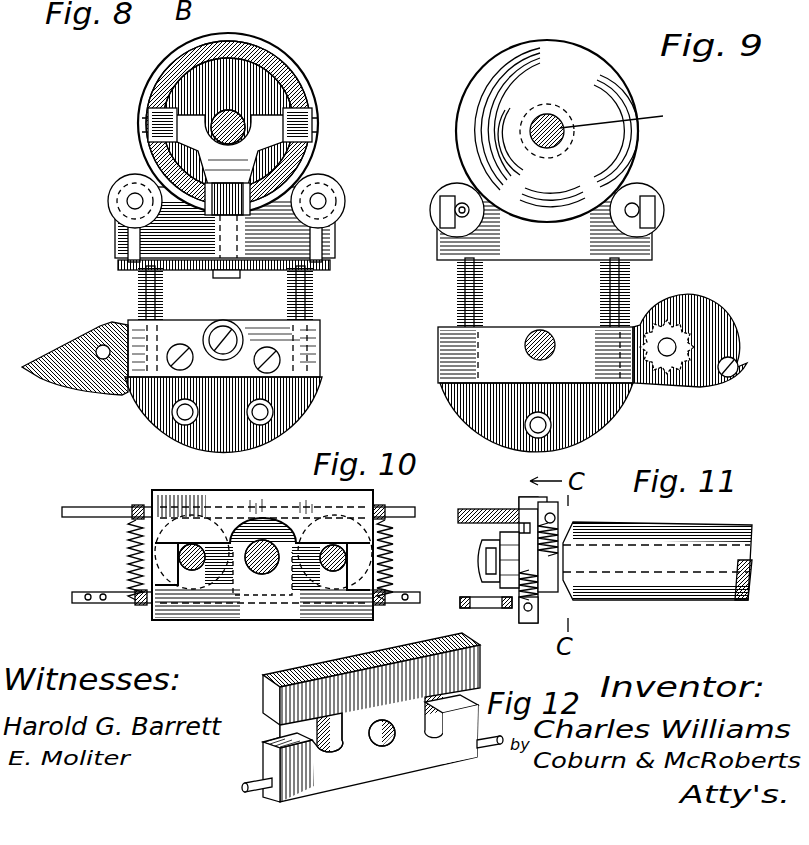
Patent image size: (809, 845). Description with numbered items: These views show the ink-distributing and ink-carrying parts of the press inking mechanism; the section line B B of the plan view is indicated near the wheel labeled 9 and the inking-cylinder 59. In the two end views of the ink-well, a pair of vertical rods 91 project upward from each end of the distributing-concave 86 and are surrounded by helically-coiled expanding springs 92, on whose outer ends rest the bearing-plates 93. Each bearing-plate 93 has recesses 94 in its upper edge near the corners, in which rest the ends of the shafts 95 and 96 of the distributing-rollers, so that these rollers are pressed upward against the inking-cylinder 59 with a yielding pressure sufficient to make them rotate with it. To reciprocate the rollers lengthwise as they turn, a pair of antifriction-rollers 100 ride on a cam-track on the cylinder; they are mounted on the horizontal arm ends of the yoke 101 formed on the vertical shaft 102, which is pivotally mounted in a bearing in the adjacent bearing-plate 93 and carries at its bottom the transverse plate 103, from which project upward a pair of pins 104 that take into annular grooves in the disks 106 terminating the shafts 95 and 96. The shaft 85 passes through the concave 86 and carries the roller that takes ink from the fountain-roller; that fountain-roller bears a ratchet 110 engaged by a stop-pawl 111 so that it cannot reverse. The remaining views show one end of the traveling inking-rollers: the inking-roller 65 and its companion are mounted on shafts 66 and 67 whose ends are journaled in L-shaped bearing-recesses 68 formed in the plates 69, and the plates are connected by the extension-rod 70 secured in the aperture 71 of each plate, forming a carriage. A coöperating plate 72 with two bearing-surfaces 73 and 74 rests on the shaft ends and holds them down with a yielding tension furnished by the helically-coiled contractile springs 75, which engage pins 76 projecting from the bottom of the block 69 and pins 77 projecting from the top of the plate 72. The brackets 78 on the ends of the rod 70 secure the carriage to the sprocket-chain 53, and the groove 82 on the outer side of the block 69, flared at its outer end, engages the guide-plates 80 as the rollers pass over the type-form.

In FIG. 8, the hatched ring of wheel 9 is at (283, 73).
In FIG. 8, the inking-cylinder 59 is at (150, 82).
In FIG. 9, the inking-cylinder 59 is at (530, 70).
In FIG. 11, the sprocket-chain 53 is at (503, 608).
In FIG. 11, the inking-roller 65 is at (670, 600).
In FIG. 10, the shaft 66 is at (336, 548).
In FIG. 10, the shaft 67 is at (195, 543).
In FIG. 12, the L-shaped bearing-recess 68 is at (340, 750).
In FIG. 11, the plate 69 is at (527, 624).
In FIG. 12, the plate 69 is at (460, 735).
In FIG. 10, the extension-rod 70 is at (260, 570).
In FIG. 12, the aperture 71 is at (388, 727).
In FIG. 10, the coöperating plate 72 is at (280, 507).
In FIG. 11, the coöperating plate 72 is at (560, 505).
In FIG. 10, the bearing-surface 73 is at (185, 546).
In FIG. 10, the bearing-surface 74 is at (334, 547).
In FIG. 10, the helically-coiled contractile spring 75 is at (128, 572).
In FIG. 11, the helically-coiled contractile spring 75 is at (530, 568).
In FIG. 10, the pin 76 is at (145, 606).
In FIG. 11, the pin 76 is at (540, 615).
In FIG. 12, the pin 76 is at (250, 783).
In FIG. 10, the pin 77 is at (143, 505).
In FIG. 11, the pin 77 is at (568, 518).
In FIG. 11, the bracket 78 is at (484, 541).
In FIG. 11, the guide-plate 80 is at (482, 508).
In FIG. 11, the groove 82 is at (524, 505).
In FIG. 9, the shaft 85 is at (552, 338).
In FIG. 8, the distributing-concave 86 is at (223, 415).
In FIG. 9, the distributing-concave 86 is at (536, 417).
In FIG. 8, the vertical rod 91 is at (308, 297).
In FIG. 9, the vertical rod 91 is at (603, 287).
In FIG. 8, the helically-coiled expanding spring 92 is at (313, 284).
In FIG. 9, the helically-coiled expanding spring 92 is at (458, 276).
In FIG. 8, the bearing-plate 93 is at (292, 240).
In FIG. 9, the bearing-plate 93 is at (614, 246).
In FIG. 8, the recess 94 is at (108, 201).
In FIG. 9, the recess 94 is at (662, 186).
In FIG. 8, the shaft 95 is at (326, 207).
In FIG. 9, the shaft 95 is at (466, 218).
In FIG. 8, the shaft 96 is at (127, 208).
In FIG. 9, the shaft 96 is at (640, 212).
In FIG. 8, the antifriction-roller 100 is at (148, 130).
In FIG. 8, the yoke 101 is at (258, 146).
In FIG. 8, the vertical shaft 102 is at (228, 200).
In FIG. 8, the transverse plate 103 is at (198, 268).
In FIG. 8, the pin 104 is at (122, 250).
In FIG. 9, the disk 106 is at (456, 184).
In FIG. 9, the ratchet 110 is at (680, 333).
In FIG. 9, the stop-pawl 111 is at (738, 357).